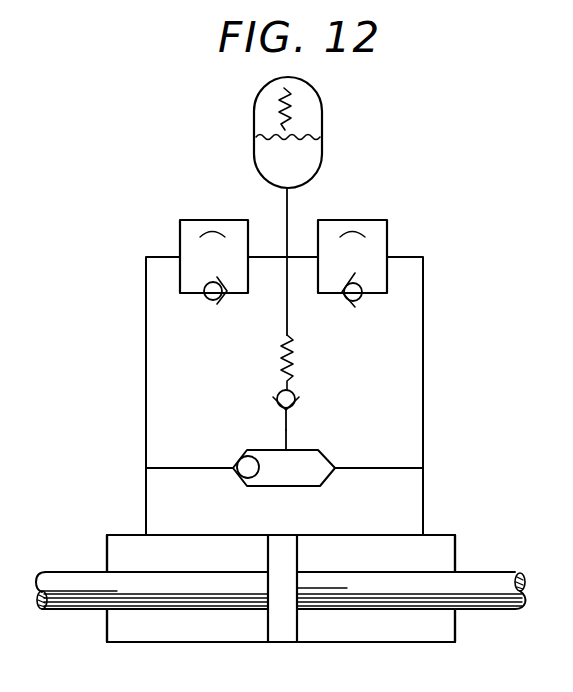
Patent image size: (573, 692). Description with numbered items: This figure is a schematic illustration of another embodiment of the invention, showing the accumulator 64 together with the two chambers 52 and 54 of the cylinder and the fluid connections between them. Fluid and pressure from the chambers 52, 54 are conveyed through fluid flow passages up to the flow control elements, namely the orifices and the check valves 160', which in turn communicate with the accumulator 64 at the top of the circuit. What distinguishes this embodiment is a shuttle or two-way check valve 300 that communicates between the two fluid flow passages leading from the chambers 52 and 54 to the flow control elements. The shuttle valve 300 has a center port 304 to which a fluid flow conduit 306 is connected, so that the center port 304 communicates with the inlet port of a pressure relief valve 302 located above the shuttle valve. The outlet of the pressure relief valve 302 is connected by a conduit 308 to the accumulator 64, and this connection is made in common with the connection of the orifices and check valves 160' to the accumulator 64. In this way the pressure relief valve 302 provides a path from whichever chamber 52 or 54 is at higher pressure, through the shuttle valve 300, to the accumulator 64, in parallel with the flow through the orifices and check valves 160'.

The accumulator 64 is at (318, 127).
The check valve 160' is at (281, 318).
The conduit 308 is at (283, 286).
The pressure relief valve 302 is at (294, 392).
The fluid flow conduit 306 is at (289, 423).
The center port 304 is at (283, 443).
The shuttle or two-way check valve 300 is at (298, 461).
The chamber 52 is at (207, 563).
The chamber 54 is at (385, 563).